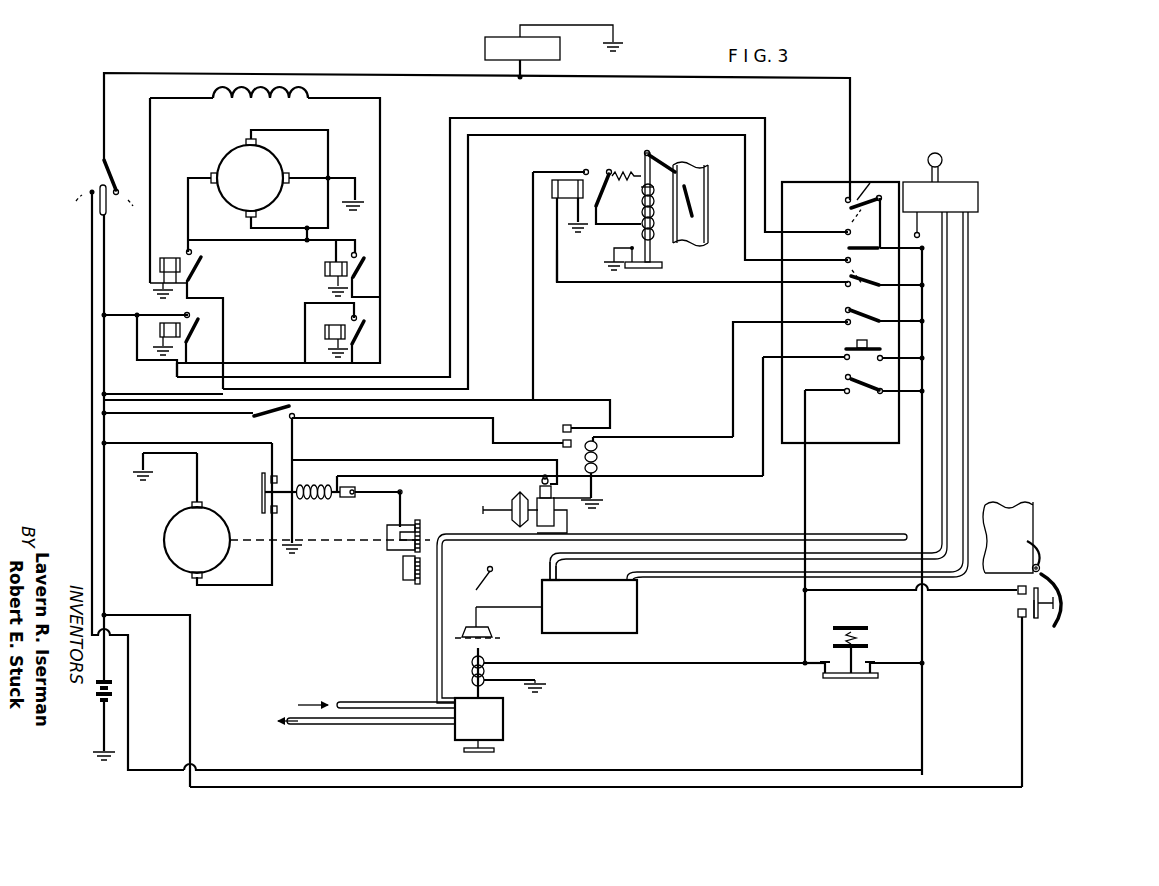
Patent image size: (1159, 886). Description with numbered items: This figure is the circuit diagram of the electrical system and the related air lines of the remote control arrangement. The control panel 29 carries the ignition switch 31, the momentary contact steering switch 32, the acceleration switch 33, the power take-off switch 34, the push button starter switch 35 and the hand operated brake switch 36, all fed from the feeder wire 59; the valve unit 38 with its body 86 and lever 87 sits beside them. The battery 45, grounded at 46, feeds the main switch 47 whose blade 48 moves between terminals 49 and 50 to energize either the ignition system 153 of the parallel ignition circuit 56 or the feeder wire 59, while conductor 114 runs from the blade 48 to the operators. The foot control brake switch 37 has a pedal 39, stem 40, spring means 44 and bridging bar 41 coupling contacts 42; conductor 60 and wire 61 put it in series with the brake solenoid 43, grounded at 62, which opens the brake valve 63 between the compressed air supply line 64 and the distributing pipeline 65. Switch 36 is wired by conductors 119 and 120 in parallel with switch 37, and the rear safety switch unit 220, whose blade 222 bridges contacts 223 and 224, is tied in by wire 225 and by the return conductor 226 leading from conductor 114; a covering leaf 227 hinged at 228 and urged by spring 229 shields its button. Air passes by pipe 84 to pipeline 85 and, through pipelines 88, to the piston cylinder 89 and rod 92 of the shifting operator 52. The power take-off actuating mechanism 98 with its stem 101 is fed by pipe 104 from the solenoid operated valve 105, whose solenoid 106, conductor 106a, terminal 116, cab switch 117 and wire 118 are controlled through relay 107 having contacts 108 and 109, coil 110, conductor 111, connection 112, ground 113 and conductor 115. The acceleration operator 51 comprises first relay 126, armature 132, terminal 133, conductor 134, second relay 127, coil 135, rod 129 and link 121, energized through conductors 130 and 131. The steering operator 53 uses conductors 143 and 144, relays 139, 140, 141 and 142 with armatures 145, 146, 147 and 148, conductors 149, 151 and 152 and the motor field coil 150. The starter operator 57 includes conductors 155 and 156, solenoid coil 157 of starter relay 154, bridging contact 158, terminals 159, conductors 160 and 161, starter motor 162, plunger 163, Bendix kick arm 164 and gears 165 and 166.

The control panel 29 is at (830, 182).
The remote control ignition switch 31 is at (843, 208).
The momentary contact steering control switch 32 is at (843, 250).
The engine acceleration switch 33 is at (840, 292).
The power take-off switch 34 is at (842, 328).
The push button starter switch 35 is at (840, 362).
The remote control brake operating switch 36 is at (845, 400).
The foot control brake switch 37 is at (819, 671).
The valve unit 38 is at (958, 182).
The pedal 39 is at (850, 626).
The stem 40 is at (855, 658).
The bridging conductor bar 41 is at (857, 680).
The contacts 42 is at (820, 668).
The brake solenoid 43 is at (472, 670).
The spring means 44 is at (843, 639).
The vehicle battery 45 is at (112, 690).
The ground 46 is at (110, 758).
The main control switch 47 is at (100, 178).
The switch blade 48 is at (106, 208).
The terminal 49 is at (88, 192).
The terminal 50 is at (118, 188).
The electrical acceleration operator 51 is at (624, 288).
The shifting operator 52 is at (538, 578).
The steering operator 53 is at (214, 166).
The parallel ignition circuit 56 is at (712, 76).
The starter operator 57 is at (339, 474).
The feeder wire 59 is at (92, 412).
The conductor 60 is at (893, 673).
The wire 61 is at (700, 665).
The ground 62 is at (546, 690).
The brake valve 63 is at (462, 736).
The compressed air supply line 64 is at (366, 700).
The distributing pipeline 65 is at (380, 727).
The pipe 84 is at (437, 618).
The pipeline 85 is at (690, 534).
The valve body 86 is at (962, 198).
The valve lever 87 is at (933, 154).
The pipelines 88 is at (947, 486).
The piston cylinder 89 is at (640, 629).
The rod 92 is at (492, 607).
The power take-off actuating mechanism 98 is at (510, 498).
The stem 101 is at (494, 512).
The compressed air supply pipe 104 is at (538, 528).
The solenoid operated valve 105 is at (555, 518).
The solenoid 106 is at (545, 476).
The conductor 106a is at (406, 453).
The relay 107 is at (603, 424).
The contact 108 is at (569, 424).
The contact 109 is at (562, 443).
The coil 110 is at (600, 455).
The conductor 111 is at (733, 412).
The connection 112 is at (897, 338).
The ground 113 is at (604, 499).
The conductor 114 is at (104, 578).
The conductor 115 is at (495, 398).
The terminal 116 is at (296, 421).
The switch 117 is at (268, 420).
The wire 118 is at (131, 466).
The conductor 119 is at (889, 398).
The conductor 120 is at (805, 520).
The link 121 is at (678, 170).
The first relay 126 is at (560, 195).
The second relay 127 is at (622, 172).
The relay armature actuated rod 129 is at (648, 150).
The conductor 130 is at (892, 316).
The conductor 131 is at (712, 284).
The armature 132 is at (641, 212).
The terminal 133 is at (583, 169).
The conductor 134 is at (533, 188).
The coil 135 is at (656, 240).
The relay 139 is at (325, 268).
The relay 140 is at (325, 330).
The relay 141 is at (167, 256).
The relay 142 is at (158, 333).
The conductor 143 is at (740, 121).
The conductor 144 is at (765, 156).
The armature 145 is at (372, 266).
The armature 146 is at (266, 176).
The armature 147 is at (372, 328).
The armature 148 is at (204, 268).
The conductor 149 is at (150, 118).
The motor field coil 150 is at (256, 88).
The conductor 151 is at (383, 176).
The conductor 152 is at (162, 364).
The ignition system 153 is at (484, 44).
The starter relay 154 is at (316, 500).
The conductor 155 is at (893, 374).
The conductor 156 is at (763, 452).
The solenoid coil 157 is at (308, 478).
The bridging contact 158 is at (262, 482).
The terminals 159 is at (265, 492).
The conductor 160 is at (198, 446).
The conductor 161 is at (244, 587).
The starter motor 162 is at (186, 562).
The plunger 163 is at (399, 500).
The Bendix kick arm 164 is at (395, 528).
The gear 165 is at (421, 540).
The gear 166 is at (421, 572).
The switch unit 220 is at (1036, 638).
The blade 222 is at (1058, 614).
The contact 223 is at (1017, 596).
The contact 224 is at (1017, 618).
The wire 225 is at (805, 591).
The conductor 226 is at (1022, 721).
The covering leaf 227 is at (1058, 600).
The hinge 228 is at (1041, 566).
The spring 229 is at (1036, 552).